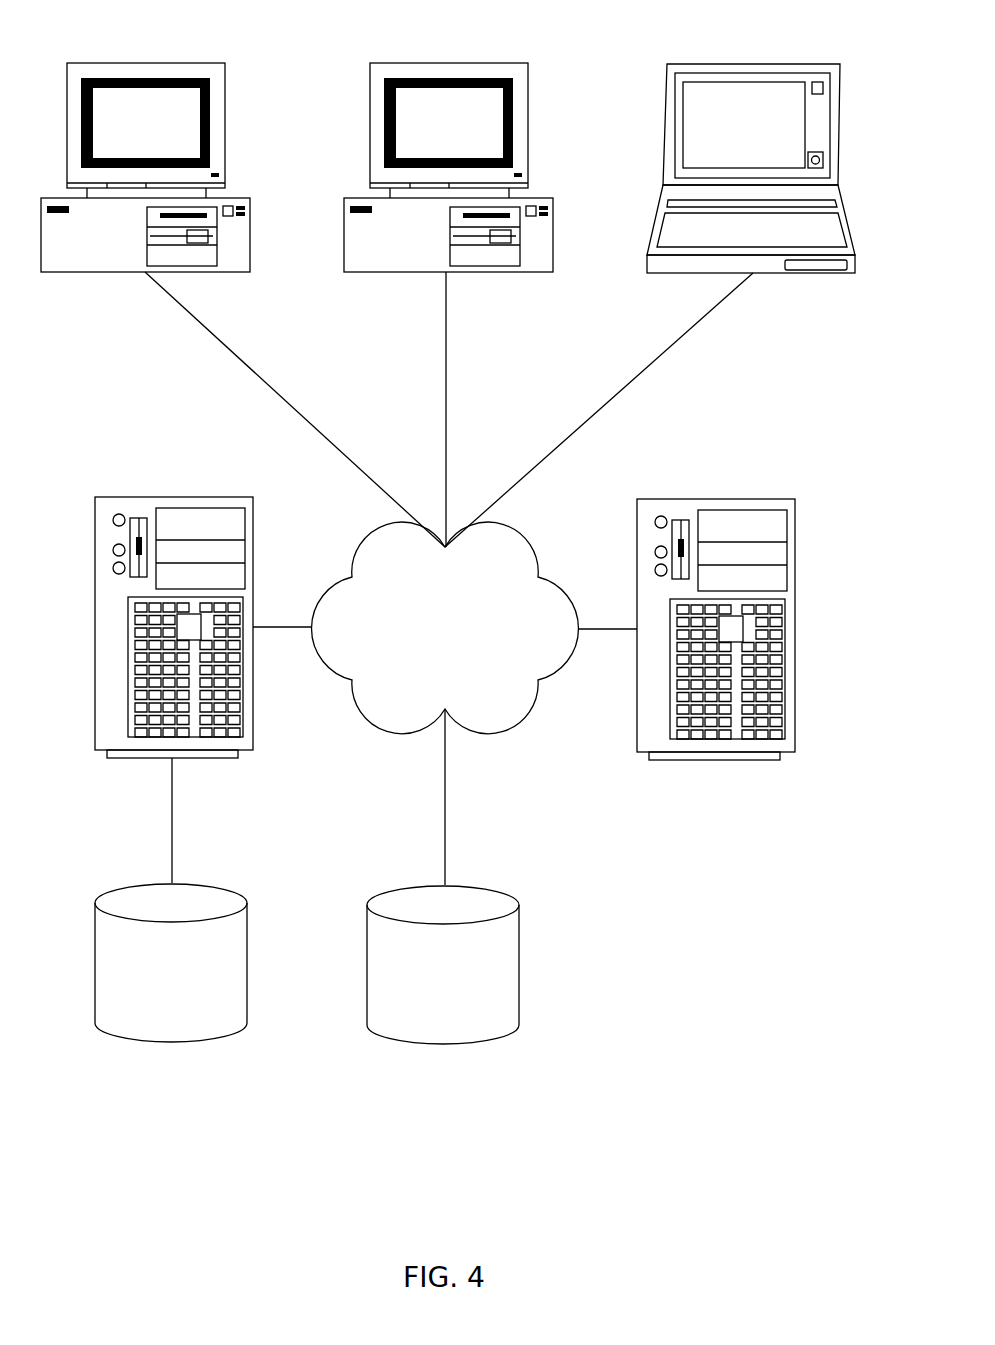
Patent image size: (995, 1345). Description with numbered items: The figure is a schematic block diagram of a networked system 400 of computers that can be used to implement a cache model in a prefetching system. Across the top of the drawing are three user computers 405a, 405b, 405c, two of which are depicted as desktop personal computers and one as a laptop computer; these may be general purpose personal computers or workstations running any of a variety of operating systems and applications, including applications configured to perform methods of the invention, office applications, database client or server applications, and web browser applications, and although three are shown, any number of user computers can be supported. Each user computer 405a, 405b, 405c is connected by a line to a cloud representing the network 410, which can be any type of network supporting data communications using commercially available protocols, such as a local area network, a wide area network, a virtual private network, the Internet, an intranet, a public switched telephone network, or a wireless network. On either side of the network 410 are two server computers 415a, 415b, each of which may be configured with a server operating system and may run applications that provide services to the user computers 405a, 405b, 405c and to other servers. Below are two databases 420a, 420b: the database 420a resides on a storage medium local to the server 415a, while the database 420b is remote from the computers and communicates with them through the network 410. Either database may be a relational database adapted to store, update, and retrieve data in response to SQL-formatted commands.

The system 400 is at (705, 1103).
The user computer 405a is at (252, 220).
The user computer 405b is at (343, 222).
The user computer 405c is at (665, 168).
The network 410 is at (482, 735).
The server computer 415a is at (95, 627).
The server computer 415b is at (796, 629).
The database 420a is at (171, 1042).
The database 420b is at (443, 1044).